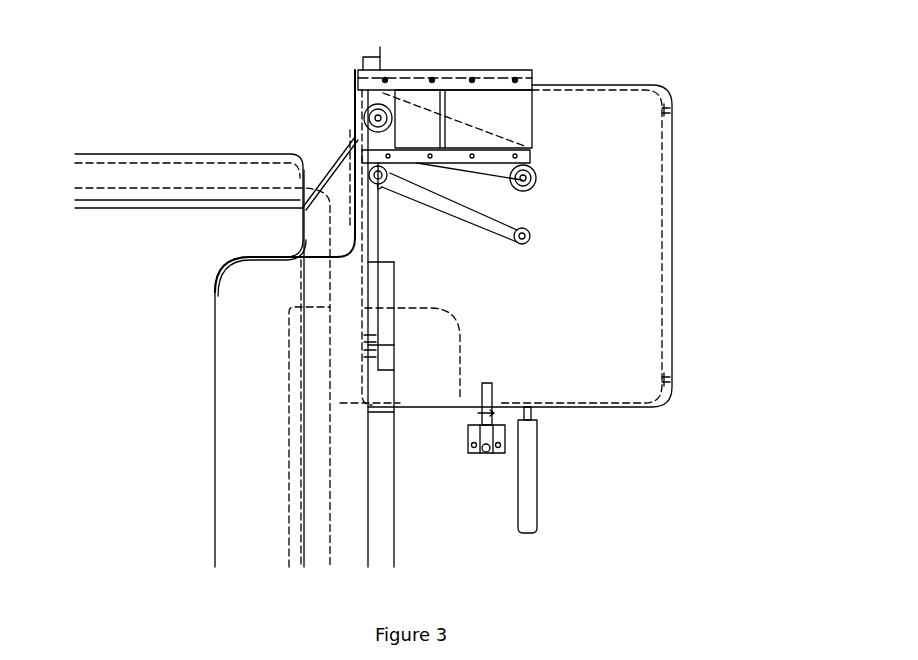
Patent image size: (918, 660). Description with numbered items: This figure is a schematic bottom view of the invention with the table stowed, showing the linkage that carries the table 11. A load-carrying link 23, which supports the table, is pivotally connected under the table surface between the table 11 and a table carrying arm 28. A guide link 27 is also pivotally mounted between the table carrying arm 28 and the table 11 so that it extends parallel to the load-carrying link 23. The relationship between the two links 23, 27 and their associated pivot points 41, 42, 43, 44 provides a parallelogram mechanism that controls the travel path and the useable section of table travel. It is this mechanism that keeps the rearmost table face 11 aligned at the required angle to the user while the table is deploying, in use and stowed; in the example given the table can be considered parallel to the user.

The table 11 is at (672, 138).
The table carrying arm 28 is at (524, 120).
The pivot point 43 is at (372, 118).
The pivot point 42 is at (372, 172).
The pivot point 44 is at (537, 177).
The load-carrying link 23 is at (485, 184).
The guide link 27 is at (467, 226).
The pivot point 41 is at (532, 236).